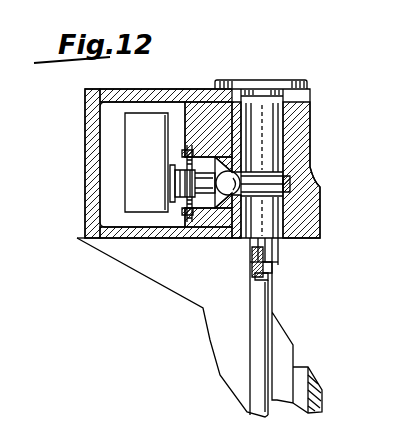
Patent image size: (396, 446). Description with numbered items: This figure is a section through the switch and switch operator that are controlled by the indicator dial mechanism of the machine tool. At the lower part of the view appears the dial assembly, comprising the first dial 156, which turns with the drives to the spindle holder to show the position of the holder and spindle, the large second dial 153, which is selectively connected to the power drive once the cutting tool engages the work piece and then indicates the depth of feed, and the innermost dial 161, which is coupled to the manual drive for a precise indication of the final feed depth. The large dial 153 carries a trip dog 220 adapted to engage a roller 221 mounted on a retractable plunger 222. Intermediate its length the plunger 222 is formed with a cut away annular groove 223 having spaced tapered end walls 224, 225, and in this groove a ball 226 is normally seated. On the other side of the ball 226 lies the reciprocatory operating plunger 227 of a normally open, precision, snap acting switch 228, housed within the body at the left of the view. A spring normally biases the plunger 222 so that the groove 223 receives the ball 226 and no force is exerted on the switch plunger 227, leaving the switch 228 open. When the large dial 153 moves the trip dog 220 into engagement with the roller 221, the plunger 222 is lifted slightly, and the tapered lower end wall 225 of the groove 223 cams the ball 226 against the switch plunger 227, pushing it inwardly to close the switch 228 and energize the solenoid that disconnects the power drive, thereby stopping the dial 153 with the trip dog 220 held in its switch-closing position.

The snap acting switch 228 is at (148, 120).
The operating plunger 227 is at (203, 195).
The ball 226 is at (229, 195).
The retractable plunger 222 is at (262, 135).
The tapered end wall 224 is at (272, 180).
The annular groove 223 is at (272, 187).
The tapered lower end wall 225 is at (272, 193).
The roller 221 is at (257, 265).
The trip dog 220 is at (266, 276).
The second dial 153 is at (262, 297).
The first dial 156 is at (282, 335).
The innermost dial 161 is at (312, 385).